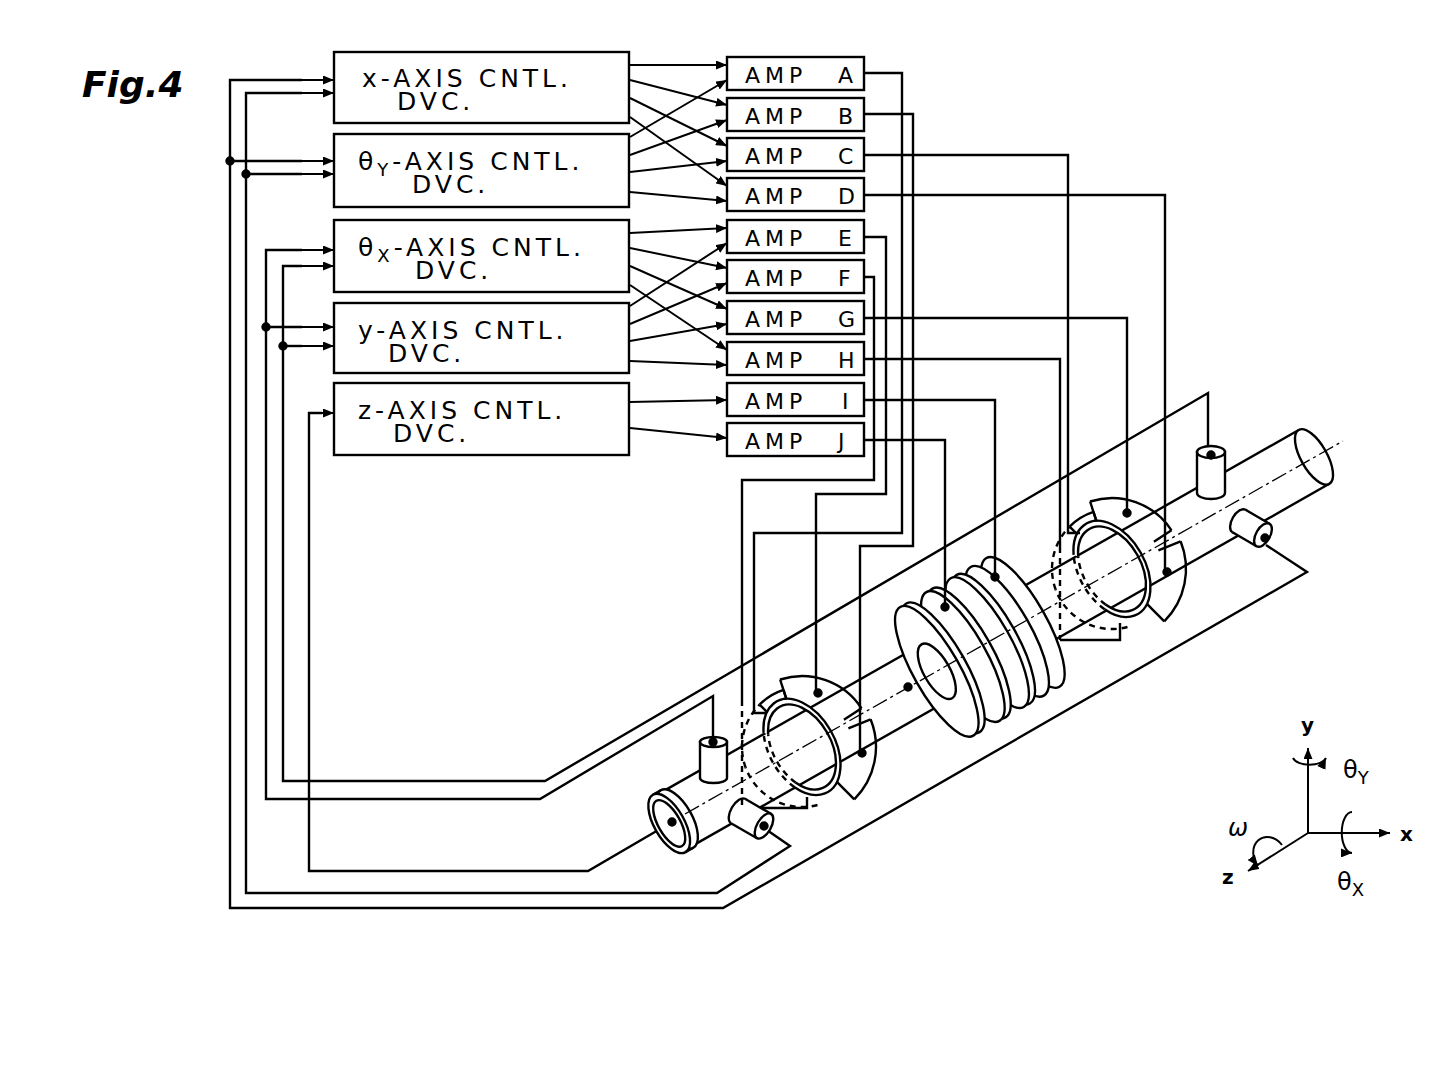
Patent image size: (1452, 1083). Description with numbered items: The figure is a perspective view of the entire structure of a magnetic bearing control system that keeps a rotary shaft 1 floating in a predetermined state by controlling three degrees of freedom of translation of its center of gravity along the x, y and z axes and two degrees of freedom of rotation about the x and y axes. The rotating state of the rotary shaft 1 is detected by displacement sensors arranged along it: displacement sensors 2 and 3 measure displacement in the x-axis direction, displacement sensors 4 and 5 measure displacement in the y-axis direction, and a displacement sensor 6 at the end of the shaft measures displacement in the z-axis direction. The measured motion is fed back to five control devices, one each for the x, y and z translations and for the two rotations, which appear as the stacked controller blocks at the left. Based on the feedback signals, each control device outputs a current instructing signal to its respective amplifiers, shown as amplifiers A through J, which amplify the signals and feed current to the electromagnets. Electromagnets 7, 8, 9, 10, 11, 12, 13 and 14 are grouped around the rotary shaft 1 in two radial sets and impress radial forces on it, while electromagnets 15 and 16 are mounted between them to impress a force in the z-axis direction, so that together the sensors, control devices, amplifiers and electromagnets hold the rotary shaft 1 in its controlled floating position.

The rotary shaft 1 is at (1286, 438).
The displacement sensor 2 is at (1275, 531).
The displacement sensor 3 is at (768, 838).
The displacement sensor 4 is at (1214, 448).
The displacement sensor 5 is at (700, 755).
The displacement sensor 6 is at (671, 826).
The electromagnet 7 is at (762, 704).
The electromagnet 8 is at (872, 770).
The electromagnet 9 is at (1072, 548).
The electromagnet 10 is at (1162, 610).
The electromagnet 11 is at (815, 688).
The electromagnet 12 is at (815, 803).
The electromagnet 13 is at (1112, 508).
The electromagnet 14 is at (1126, 628).
The electromagnet 15 is at (975, 720).
The electromagnet 16 is at (1040, 673).